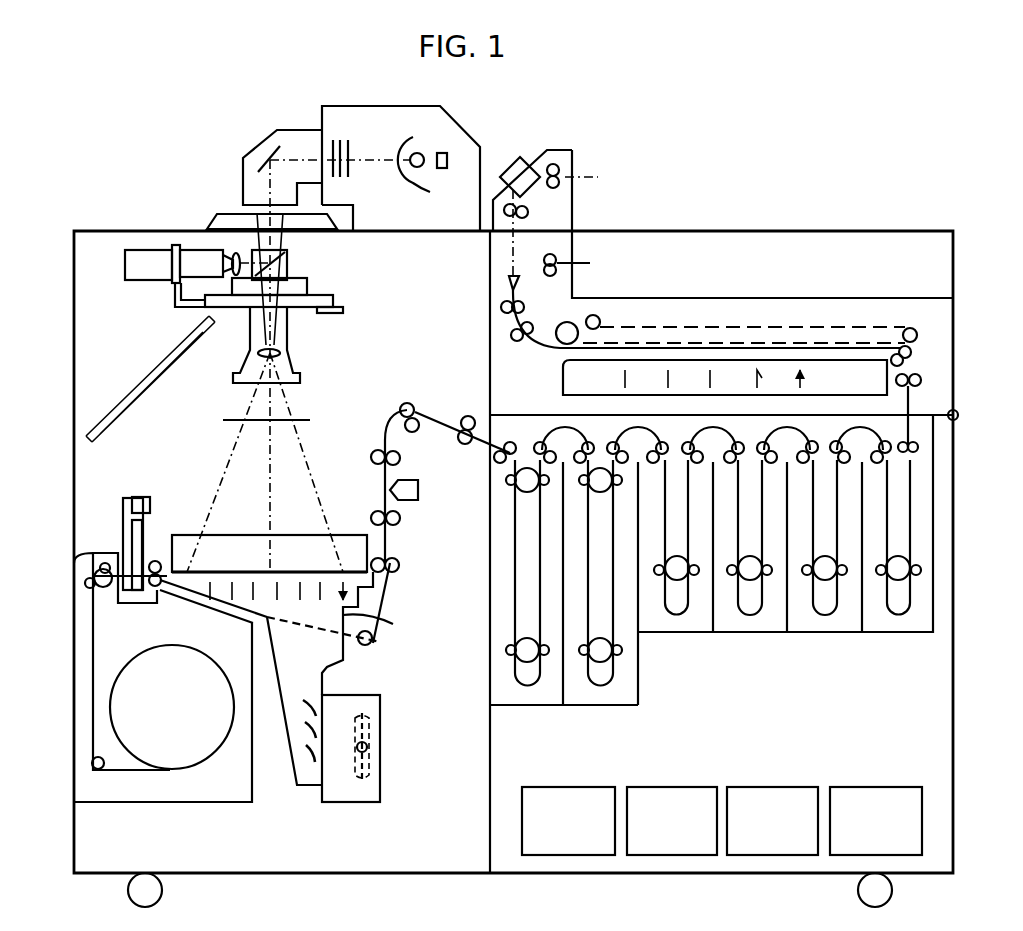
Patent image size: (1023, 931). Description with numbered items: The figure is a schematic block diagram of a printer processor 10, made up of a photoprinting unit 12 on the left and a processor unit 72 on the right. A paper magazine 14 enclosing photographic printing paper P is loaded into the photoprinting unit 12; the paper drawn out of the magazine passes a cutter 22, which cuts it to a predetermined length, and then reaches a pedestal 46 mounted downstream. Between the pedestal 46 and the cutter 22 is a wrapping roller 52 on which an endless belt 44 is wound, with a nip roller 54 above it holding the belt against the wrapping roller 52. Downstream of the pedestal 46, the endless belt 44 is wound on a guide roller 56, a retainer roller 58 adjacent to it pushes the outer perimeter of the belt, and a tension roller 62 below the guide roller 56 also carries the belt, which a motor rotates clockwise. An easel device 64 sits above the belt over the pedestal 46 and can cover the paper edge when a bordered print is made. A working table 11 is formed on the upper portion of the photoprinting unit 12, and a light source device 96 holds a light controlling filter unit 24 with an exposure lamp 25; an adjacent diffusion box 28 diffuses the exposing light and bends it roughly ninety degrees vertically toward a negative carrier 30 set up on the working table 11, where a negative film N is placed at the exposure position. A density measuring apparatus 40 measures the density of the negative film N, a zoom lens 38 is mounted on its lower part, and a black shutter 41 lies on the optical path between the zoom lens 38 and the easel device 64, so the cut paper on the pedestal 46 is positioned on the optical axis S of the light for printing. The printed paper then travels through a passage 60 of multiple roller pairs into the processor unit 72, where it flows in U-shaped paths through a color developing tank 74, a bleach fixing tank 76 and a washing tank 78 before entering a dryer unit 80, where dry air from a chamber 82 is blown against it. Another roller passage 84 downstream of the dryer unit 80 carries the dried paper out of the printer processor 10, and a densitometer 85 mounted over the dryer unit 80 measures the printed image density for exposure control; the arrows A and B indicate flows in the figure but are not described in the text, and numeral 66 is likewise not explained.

The printer processor 10 is at (838, 155).
The working table 11 is at (148, 230).
The photoprinting unit 12 is at (90, 218).
The paper magazine 14 is at (137, 804).
The cutter 22 is at (147, 537).
The light controlling filter unit 24 is at (348, 177).
The exposure lamp 25 is at (426, 168).
The diffusion box 28 is at (258, 146).
The negative carrier 30 is at (215, 214).
The zoom lens 38 is at (296, 356).
The density measuring apparatus 40 is at (128, 258).
The black shutter 41 is at (235, 418).
The endless belt 44 is at (397, 596).
The pedestal 46 is at (385, 620).
The wrapping roller 52 is at (150, 600).
The nip roller 54 is at (212, 545).
The guide roller 56 is at (400, 563).
The retainer roller 58 is at (393, 548).
The passage 60 is at (416, 404).
The tension roller 62 is at (373, 640).
The easel device 64 is at (345, 545).
The fan 66 is at (326, 690).
The processor unit 72 is at (956, 226).
The color developing tank 74 is at (545, 706).
The bleach fixing tank 76 is at (622, 706).
The washing tank 78 is at (934, 645).
The dryer unit 80 is at (932, 334).
The chamber 82 is at (870, 388).
The passage 84 is at (530, 297).
The densitometer 85 is at (520, 163).
The light source device 96 is at (320, 118).
The negative film N is at (258, 200).
The optical axis S is at (270, 437).
The air flow direction A is at (300, 583).
The air flow direction B is at (779, 378).
The photographic printing paper P is at (93, 673).